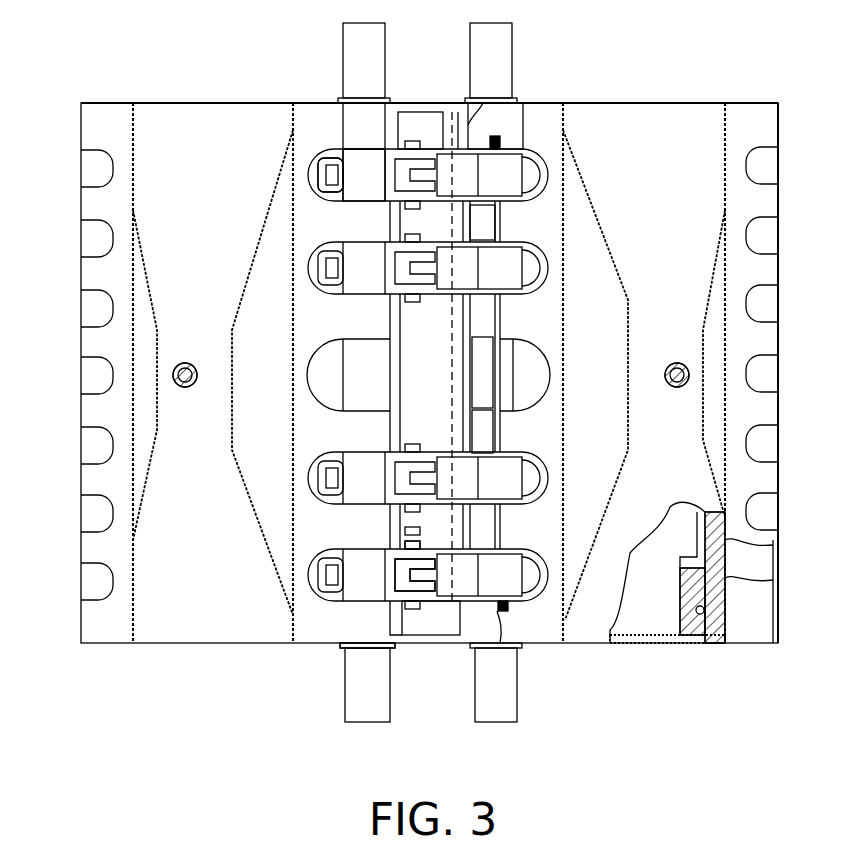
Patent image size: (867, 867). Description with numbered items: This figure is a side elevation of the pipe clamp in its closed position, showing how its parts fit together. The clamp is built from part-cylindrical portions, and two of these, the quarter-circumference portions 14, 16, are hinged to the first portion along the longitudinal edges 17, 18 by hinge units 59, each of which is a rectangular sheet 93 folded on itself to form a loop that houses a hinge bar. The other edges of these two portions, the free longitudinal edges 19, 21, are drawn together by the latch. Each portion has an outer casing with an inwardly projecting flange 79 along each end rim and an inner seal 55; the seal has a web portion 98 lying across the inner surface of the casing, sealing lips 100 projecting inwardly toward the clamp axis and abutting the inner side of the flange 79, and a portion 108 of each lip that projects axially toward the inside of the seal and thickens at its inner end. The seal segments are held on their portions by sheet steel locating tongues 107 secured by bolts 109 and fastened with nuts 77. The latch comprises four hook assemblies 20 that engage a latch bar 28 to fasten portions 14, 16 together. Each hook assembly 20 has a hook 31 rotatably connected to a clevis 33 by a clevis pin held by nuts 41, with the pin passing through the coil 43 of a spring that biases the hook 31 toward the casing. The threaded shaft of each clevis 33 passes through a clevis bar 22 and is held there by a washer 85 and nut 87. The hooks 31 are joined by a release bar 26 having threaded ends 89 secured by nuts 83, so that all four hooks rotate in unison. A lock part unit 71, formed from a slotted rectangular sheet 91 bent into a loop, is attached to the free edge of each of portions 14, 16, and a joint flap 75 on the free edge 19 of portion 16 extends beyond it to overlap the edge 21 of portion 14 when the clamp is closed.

The part-cylindrical portion 14 is at (172, 643).
The part-cylindrical portion 16 is at (681, 643).
The longitudinal edge 17 is at (760, 643).
The longitudinal edge 18 is at (107, 643).
The free longitudinal edge 19 is at (470, 650).
The hook assembly 20 is at (546, 175).
The free longitudinal edge 21 is at (395, 652).
The clevis bar 22 is at (370, 722).
The release bar 26 is at (472, 375).
The latch bar 28 is at (497, 722).
The hook 31 is at (467, 586).
The clevis 33 is at (396, 561).
The nut 41 is at (408, 604).
The coil 43 is at (440, 553).
The inner seal 55 is at (716, 643).
The hinge unit 59 is at (83, 130).
The lock part unit 71 is at (319, 643).
The joint flap 75 is at (408, 120).
The nut 77 is at (185, 363).
The flange 79 is at (642, 643).
The nut 83 is at (497, 136).
The washer 85 is at (347, 149).
The nut 87 is at (320, 175).
The threaded end 89 is at (478, 148).
The rectangular sheet 91 is at (296, 103).
The rectangular sheet 93 is at (733, 103).
The web portion 98 is at (748, 546).
The sealing lip 100 is at (683, 603).
The locating tongue 107 is at (700, 512).
The portion of the lip 108 is at (748, 580).
The bolt 109 is at (185, 387).